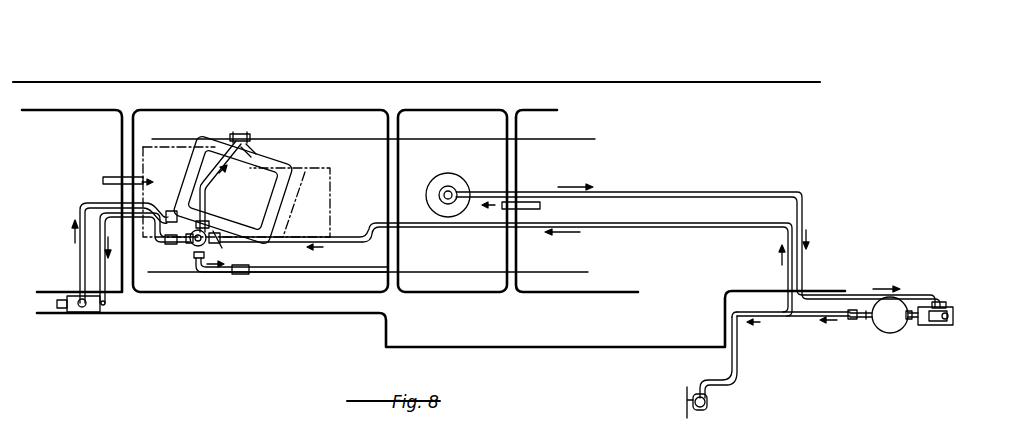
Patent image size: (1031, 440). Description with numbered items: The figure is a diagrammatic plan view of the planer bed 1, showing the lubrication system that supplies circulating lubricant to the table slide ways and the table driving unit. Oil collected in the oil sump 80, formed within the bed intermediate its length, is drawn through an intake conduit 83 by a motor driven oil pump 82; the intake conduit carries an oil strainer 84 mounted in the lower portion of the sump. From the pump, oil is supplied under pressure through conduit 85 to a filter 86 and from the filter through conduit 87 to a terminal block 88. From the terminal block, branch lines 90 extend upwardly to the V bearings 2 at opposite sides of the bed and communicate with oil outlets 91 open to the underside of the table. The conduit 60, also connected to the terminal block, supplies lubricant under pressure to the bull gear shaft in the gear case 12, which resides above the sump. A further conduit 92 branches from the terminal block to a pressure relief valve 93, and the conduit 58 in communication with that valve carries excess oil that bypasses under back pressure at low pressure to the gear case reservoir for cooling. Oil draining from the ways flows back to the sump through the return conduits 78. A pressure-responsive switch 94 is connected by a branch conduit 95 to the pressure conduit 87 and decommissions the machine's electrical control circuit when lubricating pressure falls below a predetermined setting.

The vehicle body 1 is at (63, 87).
The V bearings 2 is at (327, 140).
The gear case 12 is at (303, 173).
The conduit 58 is at (92, 202).
The conduit 60 is at (231, 243).
The return conduit 78 is at (112, 177).
The oil sump 80 is at (485, 158).
The motor driven oil pump 82 is at (940, 326).
The intake conduit 83 is at (685, 192).
The oil strainer 84 is at (450, 175).
The conduit 85 is at (942, 302).
The filter 86 is at (892, 324).
The conduit 87 is at (673, 224).
The terminal block 88 is at (195, 244).
The branch lines 90 is at (212, 178).
The oil outlets 91 is at (236, 134).
The conduit 92 is at (108, 280).
The pressure relief valve 93 is at (78, 312).
The pressure-responsive switch 94 is at (705, 407).
The branch conduit 95 is at (738, 343).